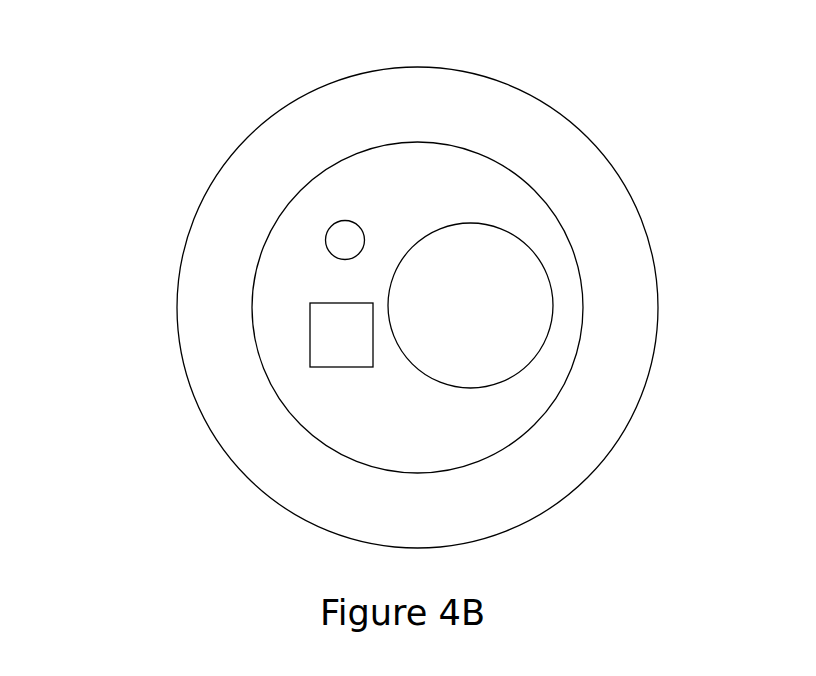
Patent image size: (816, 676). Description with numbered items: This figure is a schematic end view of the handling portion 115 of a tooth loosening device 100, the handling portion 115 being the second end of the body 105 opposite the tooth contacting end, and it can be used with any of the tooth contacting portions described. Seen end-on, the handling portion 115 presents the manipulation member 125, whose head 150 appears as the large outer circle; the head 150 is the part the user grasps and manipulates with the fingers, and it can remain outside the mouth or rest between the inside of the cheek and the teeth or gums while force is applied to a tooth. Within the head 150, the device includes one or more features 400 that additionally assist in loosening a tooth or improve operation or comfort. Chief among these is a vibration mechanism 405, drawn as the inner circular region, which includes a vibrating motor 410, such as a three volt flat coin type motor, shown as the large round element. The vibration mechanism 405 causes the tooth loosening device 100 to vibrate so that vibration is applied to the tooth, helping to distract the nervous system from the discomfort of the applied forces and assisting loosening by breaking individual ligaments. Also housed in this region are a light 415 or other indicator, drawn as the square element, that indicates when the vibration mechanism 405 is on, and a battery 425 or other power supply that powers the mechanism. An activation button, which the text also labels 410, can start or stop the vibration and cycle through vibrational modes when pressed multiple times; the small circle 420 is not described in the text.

The tooth loosening device 100 is at (578, 50).
The body 105 is at (600, 88).
The handling portion 115 is at (162, 109).
The manipulation member 125 is at (100, 343).
The head 150 is at (268, 478).
The features 400 is at (632, 264).
The vibration mechanism 405 is at (582, 180).
The vibrating motor 410 is at (522, 352).
The light 415 is at (309, 334).
The light source 420 is at (325, 240).
The battery 425 is at (457, 437).